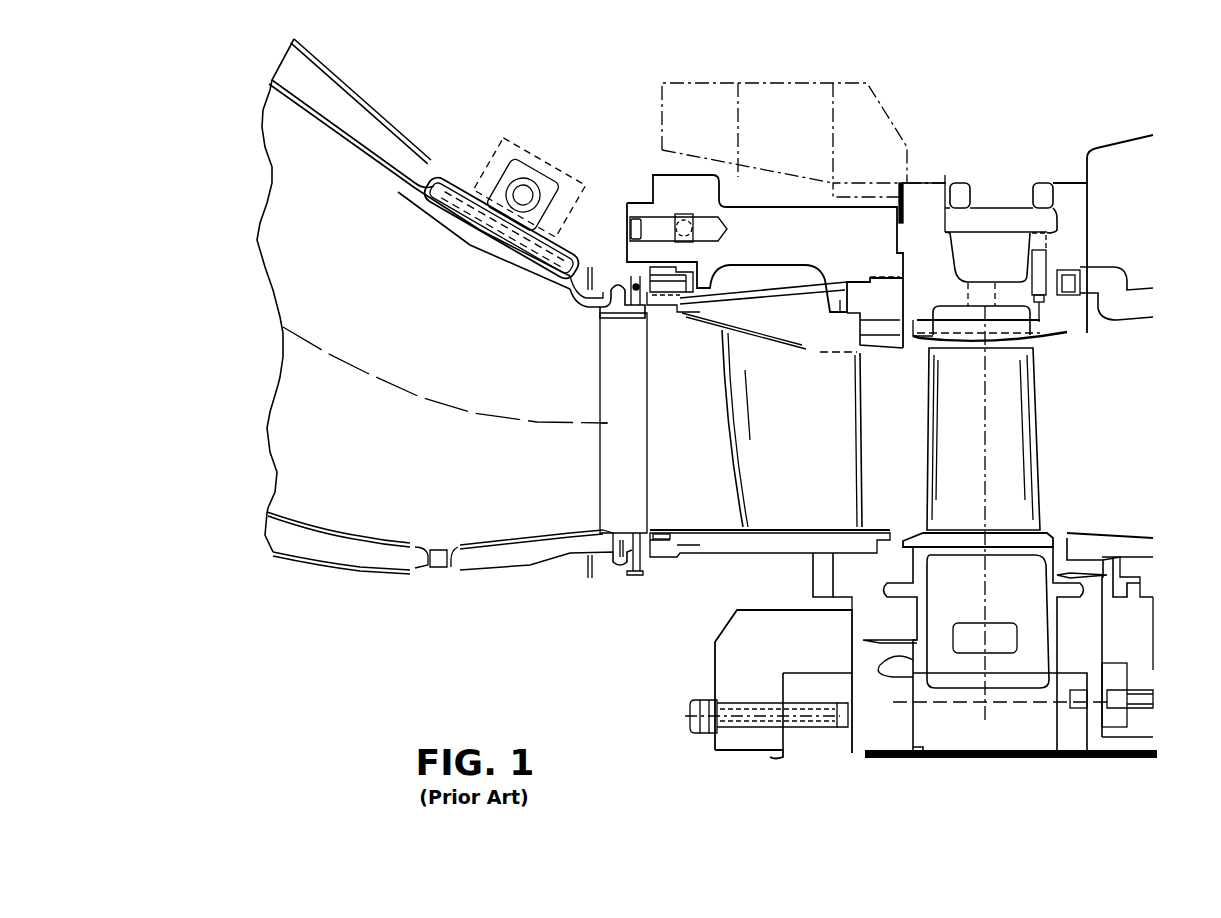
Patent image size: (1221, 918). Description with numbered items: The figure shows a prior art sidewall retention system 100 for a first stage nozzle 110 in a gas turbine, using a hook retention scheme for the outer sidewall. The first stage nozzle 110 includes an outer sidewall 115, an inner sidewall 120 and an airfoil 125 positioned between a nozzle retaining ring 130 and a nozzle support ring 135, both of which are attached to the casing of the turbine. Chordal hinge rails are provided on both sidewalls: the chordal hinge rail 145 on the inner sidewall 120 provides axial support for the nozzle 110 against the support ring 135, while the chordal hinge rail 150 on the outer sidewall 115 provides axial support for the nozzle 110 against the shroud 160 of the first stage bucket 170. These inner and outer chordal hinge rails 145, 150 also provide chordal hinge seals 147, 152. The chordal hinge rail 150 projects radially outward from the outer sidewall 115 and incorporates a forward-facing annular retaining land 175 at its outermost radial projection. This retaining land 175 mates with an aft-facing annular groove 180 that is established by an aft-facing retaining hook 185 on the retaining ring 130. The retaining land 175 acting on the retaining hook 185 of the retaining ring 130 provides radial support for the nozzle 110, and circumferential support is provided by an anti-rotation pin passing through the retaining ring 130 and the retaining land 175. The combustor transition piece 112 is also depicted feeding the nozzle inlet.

The sidewall retention system 100 is at (642, 819).
The first stage nozzle 110 is at (671, 408).
The transition piece 112 is at (357, 252).
The outer sidewall 115 is at (767, 327).
The inner sidewall 120 is at (716, 540).
The airfoil 125 is at (758, 350).
The nozzle retaining ring 130 is at (762, 200).
The nozzle support ring 135 is at (713, 663).
The chordal hinge rail 145 is at (798, 562).
The chordal hinge seal 147 is at (845, 588).
The chordal hinge rail 150 is at (900, 300).
The chordal hinge seal 152 is at (912, 318).
The shroud 160 is at (912, 197).
The first stage bucket 170 is at (1017, 413).
The retaining land 175 is at (868, 288).
The annular groove 180 is at (853, 296).
The retaining hook 185 is at (853, 305).